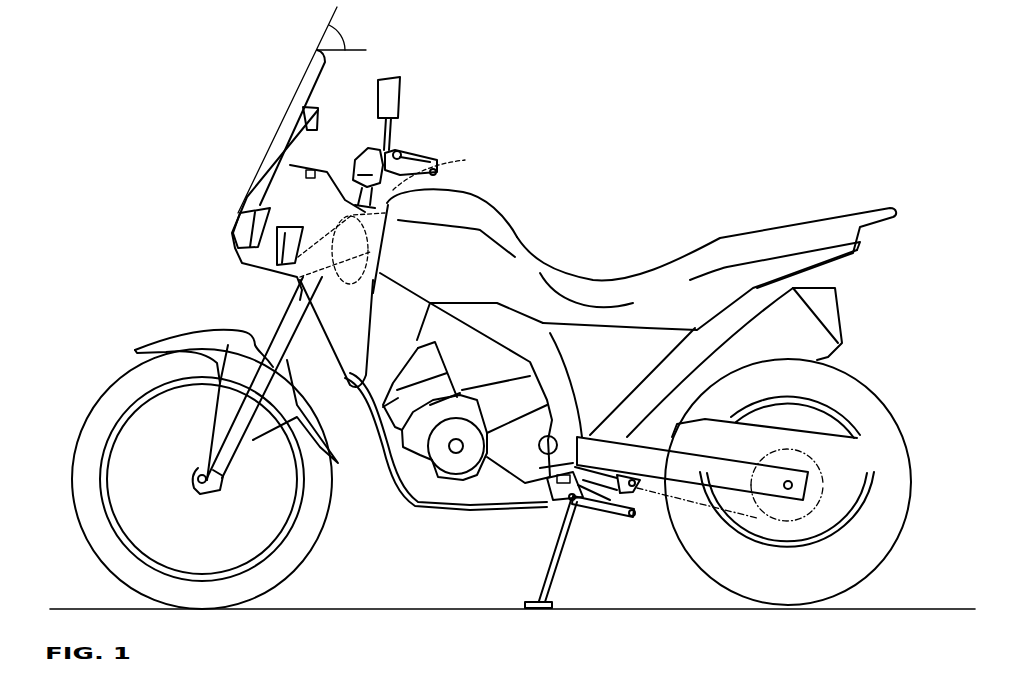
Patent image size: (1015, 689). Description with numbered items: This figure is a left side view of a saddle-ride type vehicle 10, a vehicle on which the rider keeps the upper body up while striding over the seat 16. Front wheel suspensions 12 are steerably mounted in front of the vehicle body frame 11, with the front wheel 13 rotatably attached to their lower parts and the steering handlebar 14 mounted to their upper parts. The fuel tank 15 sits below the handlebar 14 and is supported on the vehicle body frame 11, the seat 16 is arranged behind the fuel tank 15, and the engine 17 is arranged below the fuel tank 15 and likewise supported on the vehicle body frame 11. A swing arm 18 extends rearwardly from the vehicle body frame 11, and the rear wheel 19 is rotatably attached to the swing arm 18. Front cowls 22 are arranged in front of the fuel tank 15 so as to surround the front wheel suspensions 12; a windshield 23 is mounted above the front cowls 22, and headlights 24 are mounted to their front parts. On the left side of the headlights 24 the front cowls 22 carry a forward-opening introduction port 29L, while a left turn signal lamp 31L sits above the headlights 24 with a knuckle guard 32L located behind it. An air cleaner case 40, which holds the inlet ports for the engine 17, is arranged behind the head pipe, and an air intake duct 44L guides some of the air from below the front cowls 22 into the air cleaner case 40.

The saddle-ride type vehicle 10 is at (145, 108).
The vehicle body frame 11 is at (413, 500).
The front wheel suspensions 12 is at (295, 316).
The front wheel 13 is at (118, 395).
The steering handlebar 14 is at (400, 140).
The fuel tank 15 is at (478, 207).
The seat 16 is at (600, 283).
The engine 17 is at (460, 465).
The swing arm 18 is at (655, 512).
The rear wheel 19 is at (890, 492).
The front cowls 22 is at (265, 172).
The windshield 23 is at (298, 92).
The headlights 24 is at (240, 232).
The introduction port 29L is at (257, 277).
The turn signal lamp 31L is at (305, 170).
The knuckle guard 32L is at (362, 160).
The air cleaner case 40 is at (452, 176).
The air intake duct 44L is at (326, 292).